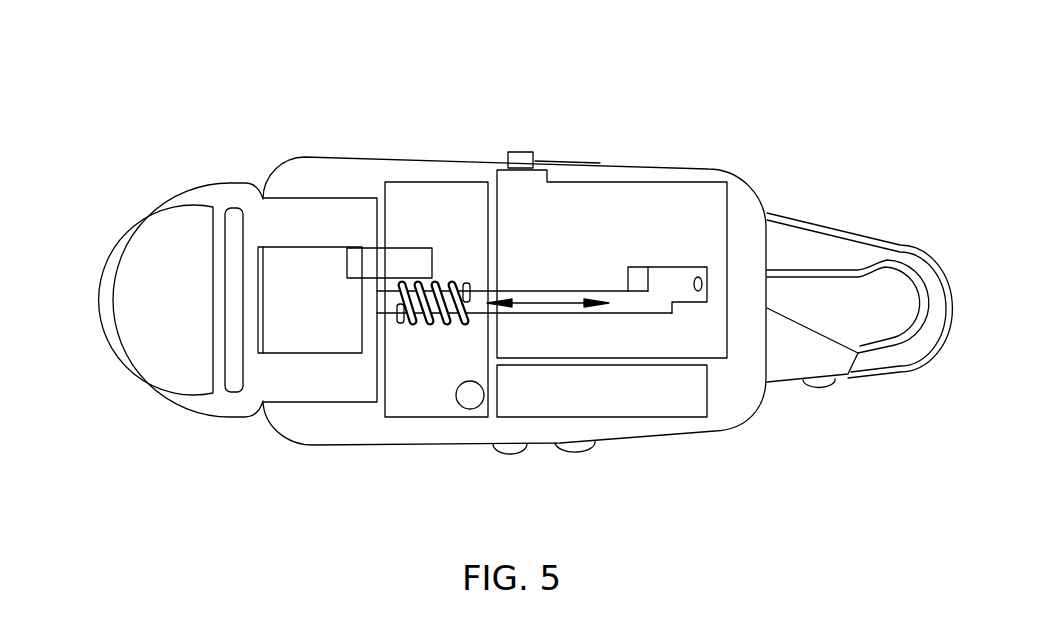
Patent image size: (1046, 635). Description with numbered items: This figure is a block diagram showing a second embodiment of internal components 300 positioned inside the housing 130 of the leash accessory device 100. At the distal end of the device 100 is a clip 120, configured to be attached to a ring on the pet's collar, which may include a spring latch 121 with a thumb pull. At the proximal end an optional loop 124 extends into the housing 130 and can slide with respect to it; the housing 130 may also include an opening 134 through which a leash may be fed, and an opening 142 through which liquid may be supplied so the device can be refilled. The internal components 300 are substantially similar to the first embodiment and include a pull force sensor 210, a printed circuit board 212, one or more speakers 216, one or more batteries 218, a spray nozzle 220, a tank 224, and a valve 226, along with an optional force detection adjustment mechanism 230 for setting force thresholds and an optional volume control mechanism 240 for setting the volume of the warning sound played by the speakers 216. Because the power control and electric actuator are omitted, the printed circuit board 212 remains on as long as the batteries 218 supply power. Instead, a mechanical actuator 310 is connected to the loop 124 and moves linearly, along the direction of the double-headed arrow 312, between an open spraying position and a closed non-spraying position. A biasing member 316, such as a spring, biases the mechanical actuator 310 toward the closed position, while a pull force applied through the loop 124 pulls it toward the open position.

The device 100 is at (196, 85).
The clip 120 is at (923, 253).
The spring latch 121 is at (823, 387).
The loop 124 is at (117, 272).
The housing 130 is at (383, 157).
The opening 134 is at (233, 238).
The opening 142 is at (535, 160).
The pull force sensor 210 is at (353, 260).
The printed circuit board 212 is at (403, 417).
The speaker 216 is at (470, 409).
The batteries 218 is at (633, 398).
The spray nozzle 220 is at (707, 282).
The tank 224 is at (628, 203).
The valve 226 is at (522, 150).
The force detection adjustment mechanism 230 is at (510, 455).
The volume control mechanism 240 is at (577, 452).
The internal components 300 is at (338, 185).
The mechanical actuator 310 is at (660, 267).
The double-headed arrow 312 is at (542, 303).
The biasing member 316 is at (433, 327).